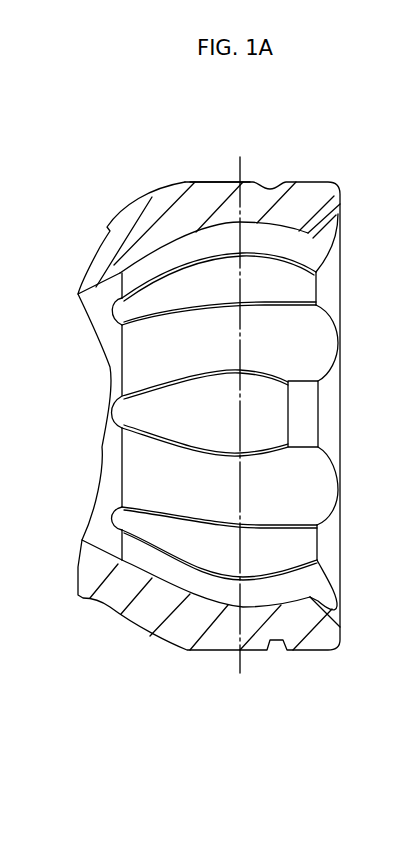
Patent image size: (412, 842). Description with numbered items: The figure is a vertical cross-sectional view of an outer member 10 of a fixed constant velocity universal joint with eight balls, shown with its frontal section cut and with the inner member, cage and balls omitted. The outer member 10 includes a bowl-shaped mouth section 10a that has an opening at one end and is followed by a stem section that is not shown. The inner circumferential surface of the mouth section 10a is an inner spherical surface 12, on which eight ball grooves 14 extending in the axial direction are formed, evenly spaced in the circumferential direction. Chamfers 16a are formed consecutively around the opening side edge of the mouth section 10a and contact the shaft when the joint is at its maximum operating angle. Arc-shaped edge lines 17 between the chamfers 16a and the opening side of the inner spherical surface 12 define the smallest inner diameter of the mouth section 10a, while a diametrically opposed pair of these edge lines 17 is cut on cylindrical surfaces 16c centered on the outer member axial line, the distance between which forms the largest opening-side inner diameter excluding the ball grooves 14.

The outer member 10 is at (185, 155).
The mouth section 10a is at (254, 181).
The inner spherical surface 12 is at (173, 246).
The ball grooves 14 is at (320, 339).
The chamfers 16a is at (333, 213).
The cylindrical surfaces 16c is at (308, 402).
The arc-shaped edge lines 17 is at (318, 289).